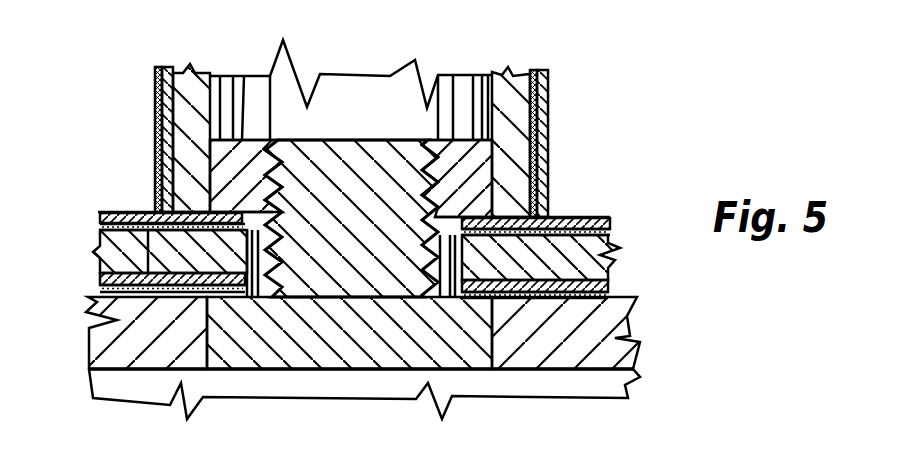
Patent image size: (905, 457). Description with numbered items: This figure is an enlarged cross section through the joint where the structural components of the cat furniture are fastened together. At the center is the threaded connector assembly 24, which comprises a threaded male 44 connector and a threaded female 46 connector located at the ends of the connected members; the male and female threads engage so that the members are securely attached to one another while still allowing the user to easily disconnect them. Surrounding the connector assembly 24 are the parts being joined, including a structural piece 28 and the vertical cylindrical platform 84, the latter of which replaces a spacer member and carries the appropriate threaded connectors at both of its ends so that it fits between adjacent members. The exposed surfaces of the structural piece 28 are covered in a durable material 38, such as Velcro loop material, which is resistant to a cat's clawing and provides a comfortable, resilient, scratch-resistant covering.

The threaded connector assembly 24 is at (375, 141).
The structural piece 28 is at (147, 212).
The durable material 38 is at (548, 132).
The threaded male connector 44 is at (330, 140).
The threaded female connector 46 is at (252, 142).
The vertical cylindrical platform 84 is at (92, 311).